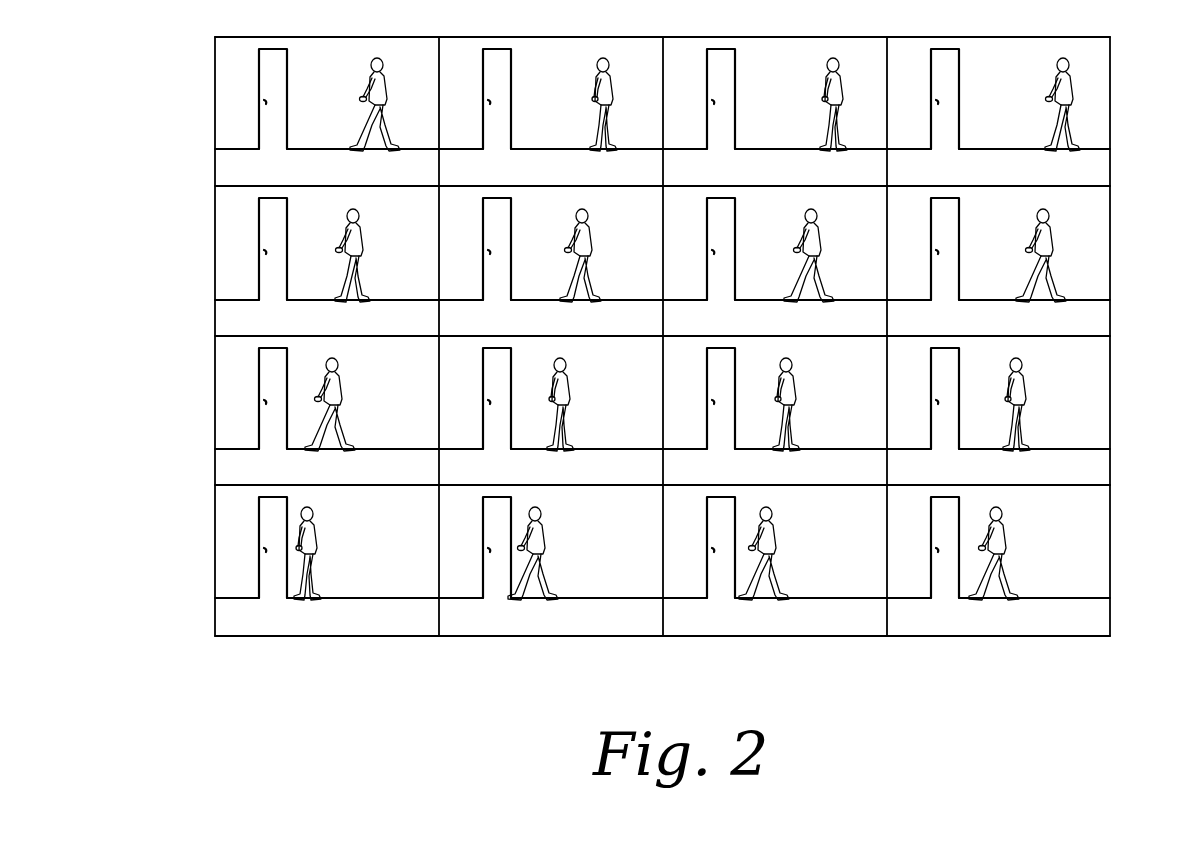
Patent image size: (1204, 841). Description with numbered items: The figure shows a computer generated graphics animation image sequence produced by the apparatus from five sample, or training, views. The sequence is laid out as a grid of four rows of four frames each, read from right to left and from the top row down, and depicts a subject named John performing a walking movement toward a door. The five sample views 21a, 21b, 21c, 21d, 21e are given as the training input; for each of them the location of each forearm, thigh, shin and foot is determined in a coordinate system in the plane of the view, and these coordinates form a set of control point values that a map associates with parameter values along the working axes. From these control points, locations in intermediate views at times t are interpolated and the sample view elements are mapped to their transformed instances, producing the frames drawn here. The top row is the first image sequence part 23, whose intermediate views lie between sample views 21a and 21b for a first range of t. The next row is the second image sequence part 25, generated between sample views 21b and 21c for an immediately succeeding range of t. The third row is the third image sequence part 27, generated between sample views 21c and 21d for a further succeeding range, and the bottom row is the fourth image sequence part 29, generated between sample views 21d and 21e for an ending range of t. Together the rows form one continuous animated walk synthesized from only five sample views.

The first image sequence part 23 is at (188, 94).
The second image sequence part 25 is at (185, 231).
The third image sequence part 27 is at (184, 391).
The fourth image sequence part 29 is at (185, 543).
The sample view 21a is at (1111, 105).
The sample view 21b is at (1111, 236).
The sample view 21c is at (1111, 398).
The sample view 21d is at (1111, 548).
The sample view 21e is at (255, 636).